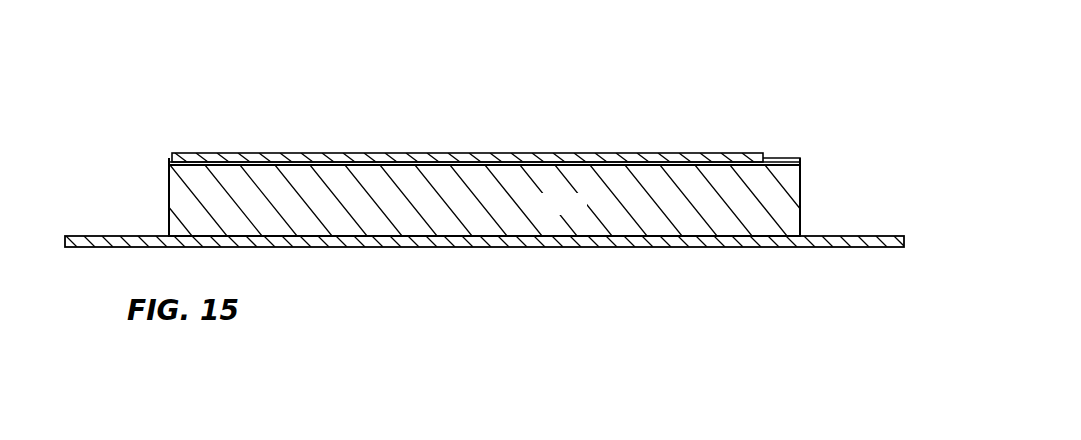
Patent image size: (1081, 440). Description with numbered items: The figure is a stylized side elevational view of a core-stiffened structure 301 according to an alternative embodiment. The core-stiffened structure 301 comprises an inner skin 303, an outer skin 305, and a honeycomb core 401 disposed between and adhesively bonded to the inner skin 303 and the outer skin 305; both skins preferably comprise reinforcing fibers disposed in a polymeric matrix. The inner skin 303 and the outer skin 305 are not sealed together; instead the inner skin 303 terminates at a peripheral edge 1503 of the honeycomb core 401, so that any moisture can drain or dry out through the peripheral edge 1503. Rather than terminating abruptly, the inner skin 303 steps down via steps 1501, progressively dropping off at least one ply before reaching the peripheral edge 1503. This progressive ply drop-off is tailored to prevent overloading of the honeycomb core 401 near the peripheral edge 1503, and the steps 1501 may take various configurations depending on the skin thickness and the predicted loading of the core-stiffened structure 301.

The core-stiffened structure 301 is at (485, 134).
The inner skin 303 is at (565, 153).
The outer skin 305 is at (882, 236).
The honeycomb core 401 is at (583, 212).
The steps 1501 is at (207, 157).
The peripheral edge 1503 is at (168, 215).